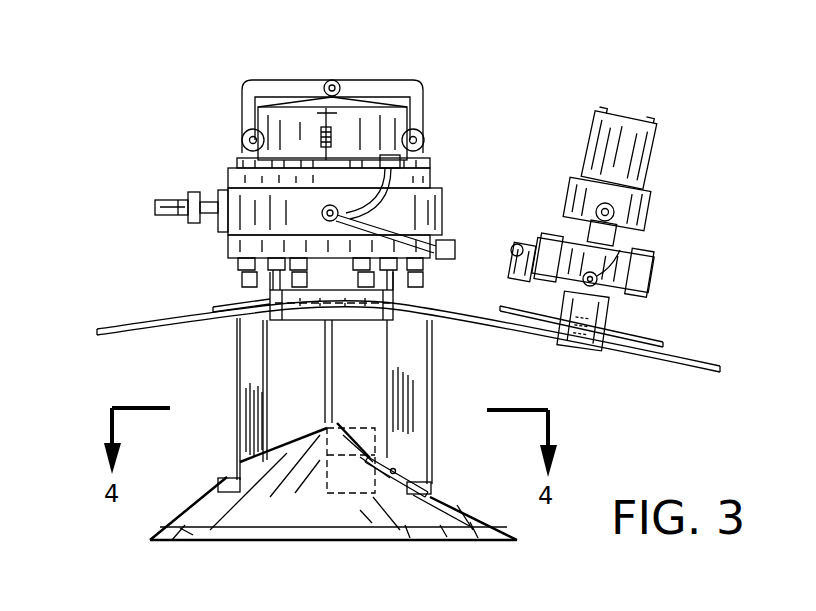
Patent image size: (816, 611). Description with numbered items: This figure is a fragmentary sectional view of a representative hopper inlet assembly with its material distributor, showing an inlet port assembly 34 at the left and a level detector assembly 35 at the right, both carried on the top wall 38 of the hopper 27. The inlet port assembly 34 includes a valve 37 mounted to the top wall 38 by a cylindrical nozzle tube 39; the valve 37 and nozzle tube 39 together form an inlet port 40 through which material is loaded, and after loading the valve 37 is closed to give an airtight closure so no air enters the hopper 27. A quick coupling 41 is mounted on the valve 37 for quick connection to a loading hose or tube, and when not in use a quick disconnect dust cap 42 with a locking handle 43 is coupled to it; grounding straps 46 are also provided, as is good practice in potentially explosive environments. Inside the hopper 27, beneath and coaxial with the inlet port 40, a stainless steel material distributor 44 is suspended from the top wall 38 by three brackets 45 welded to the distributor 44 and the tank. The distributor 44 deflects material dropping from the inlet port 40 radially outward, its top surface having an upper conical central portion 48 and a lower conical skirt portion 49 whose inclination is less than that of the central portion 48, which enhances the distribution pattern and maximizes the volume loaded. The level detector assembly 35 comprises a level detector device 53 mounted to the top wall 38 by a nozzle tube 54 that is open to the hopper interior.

The upper hopper 27 is at (92, 327).
The inlet port assembly 34 is at (155, 180).
The level detector assembly 35 is at (617, 206).
The valve 37 is at (443, 205).
The top wall 38 is at (150, 318).
The cylindrical nozzle tube 39 is at (270, 300).
The inlet port 40 is at (348, 312).
The quick coupling 41 is at (226, 178).
The quick disconnect dust cap 42 is at (373, 125).
The locking handle 43 is at (282, 82).
The material distributor 44 is at (258, 548).
The brackets 45 is at (236, 378).
The grounding straps 46 is at (443, 232).
The upper conical central portion 48 is at (462, 475).
The conical skirt portion 49 is at (168, 532).
The level detector device 53 is at (628, 118).
The nozzle tube 54 is at (613, 322).